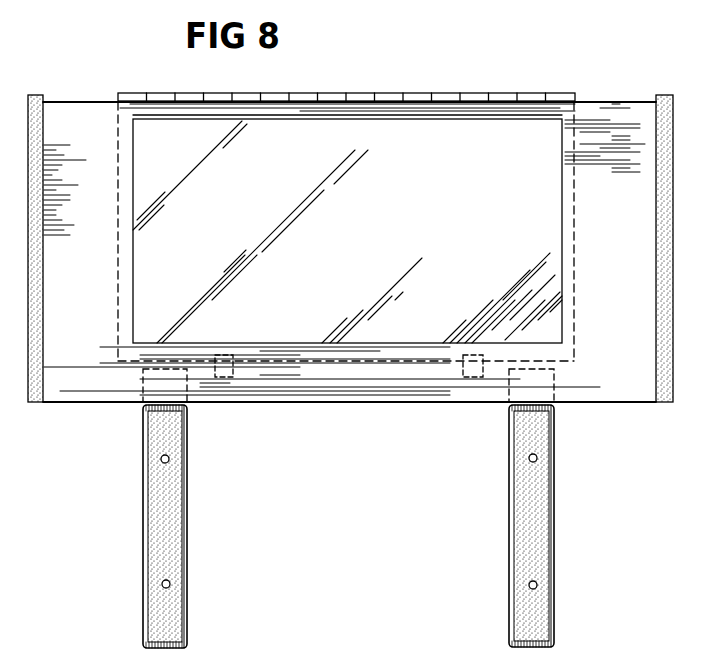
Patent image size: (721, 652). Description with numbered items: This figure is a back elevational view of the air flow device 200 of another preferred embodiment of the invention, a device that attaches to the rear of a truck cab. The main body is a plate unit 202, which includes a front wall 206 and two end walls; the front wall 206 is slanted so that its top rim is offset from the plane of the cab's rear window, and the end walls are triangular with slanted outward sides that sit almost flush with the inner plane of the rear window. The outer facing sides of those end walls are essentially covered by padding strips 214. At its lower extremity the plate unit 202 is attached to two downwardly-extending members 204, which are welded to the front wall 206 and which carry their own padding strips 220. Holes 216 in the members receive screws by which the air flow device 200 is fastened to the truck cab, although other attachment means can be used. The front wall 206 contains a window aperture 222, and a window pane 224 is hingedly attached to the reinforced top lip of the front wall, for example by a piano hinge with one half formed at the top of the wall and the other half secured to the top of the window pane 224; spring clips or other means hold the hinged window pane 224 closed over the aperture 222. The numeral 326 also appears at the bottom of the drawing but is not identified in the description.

The headboard assembly 200 is at (316, 406).
The lower frame rail 202 is at (622, 388).
The legs 204 is at (188, 520).
The top frame member 206 is at (617, 122).
The side posts 214 is at (673, 250).
The upper mounting hole 216 is at (170, 460).
The lower mounting hole 220 is at (167, 566).
The mirror panel 222 is at (361, 178).
The panel frame 224 is at (452, 132).
The bed frame 326 is at (274, 650).